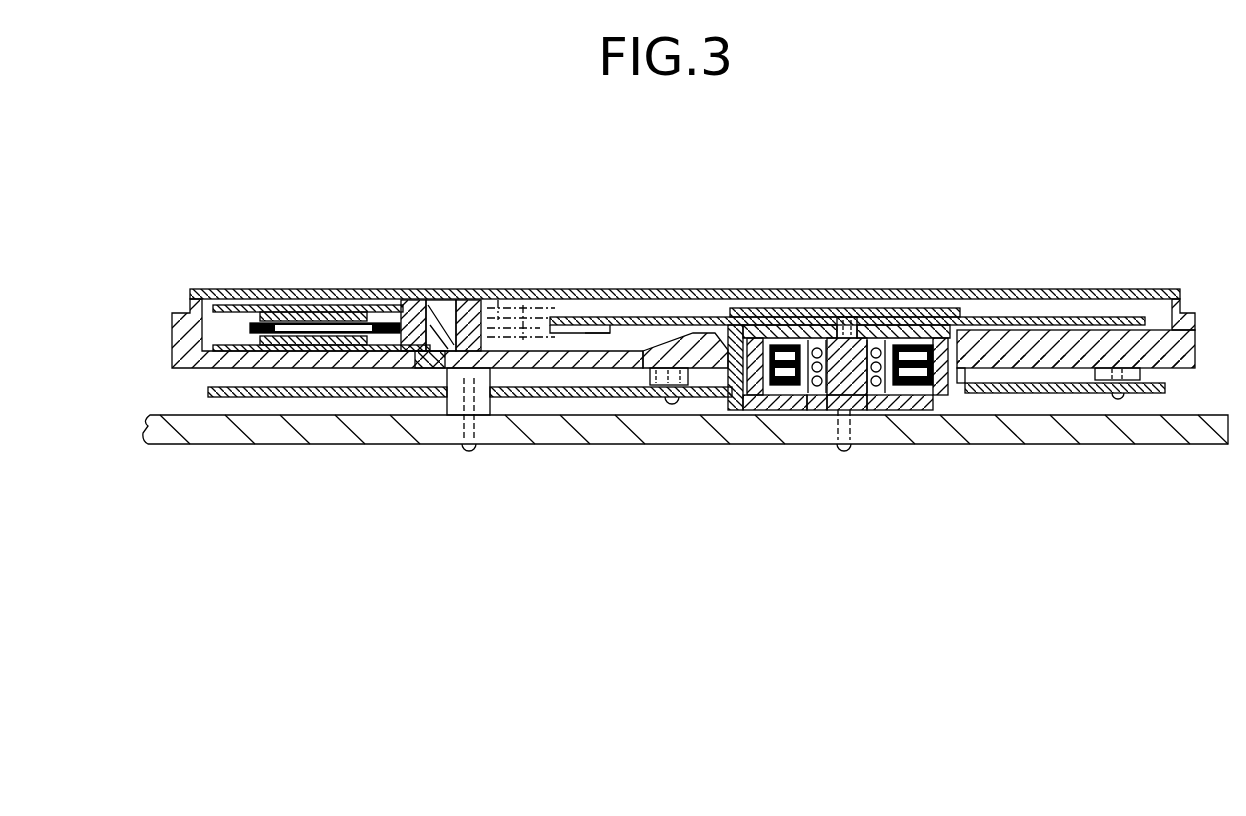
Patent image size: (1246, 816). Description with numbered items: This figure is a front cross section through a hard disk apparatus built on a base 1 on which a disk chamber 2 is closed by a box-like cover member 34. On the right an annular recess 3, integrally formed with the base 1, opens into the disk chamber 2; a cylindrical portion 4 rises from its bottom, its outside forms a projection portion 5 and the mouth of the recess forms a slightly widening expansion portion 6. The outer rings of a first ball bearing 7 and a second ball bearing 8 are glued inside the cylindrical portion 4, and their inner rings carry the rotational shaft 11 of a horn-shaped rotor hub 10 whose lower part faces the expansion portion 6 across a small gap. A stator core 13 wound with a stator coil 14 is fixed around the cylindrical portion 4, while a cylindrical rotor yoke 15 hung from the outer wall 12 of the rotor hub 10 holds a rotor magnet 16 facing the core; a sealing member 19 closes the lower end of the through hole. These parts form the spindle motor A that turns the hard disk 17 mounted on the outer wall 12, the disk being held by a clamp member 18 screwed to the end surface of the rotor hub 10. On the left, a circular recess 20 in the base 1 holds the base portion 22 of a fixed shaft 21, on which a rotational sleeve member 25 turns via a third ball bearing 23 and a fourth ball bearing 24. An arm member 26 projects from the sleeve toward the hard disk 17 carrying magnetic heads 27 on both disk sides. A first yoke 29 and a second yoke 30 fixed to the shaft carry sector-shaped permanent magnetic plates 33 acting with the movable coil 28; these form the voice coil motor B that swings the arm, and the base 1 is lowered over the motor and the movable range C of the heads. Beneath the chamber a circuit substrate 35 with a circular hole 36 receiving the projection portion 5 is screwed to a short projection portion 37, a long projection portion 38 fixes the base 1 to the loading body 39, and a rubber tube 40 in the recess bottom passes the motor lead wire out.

The base 1 is at (1010, 368).
The disk chamber 2 is at (1160, 315).
The annular recess 3 is at (946, 398).
The cylindrical portion 4 is at (860, 322).
The projection portion 5 is at (977, 370).
The expansion portion 6 is at (702, 350).
The first ball bearing 7 is at (856, 338).
The second ball bearing 8 is at (888, 410).
The rotor hub 10 is at (770, 338).
The rotational shaft 11 is at (858, 410).
The outer wall 12 is at (985, 347).
The stator core 13 is at (935, 338).
The stator coil 14 is at (884, 345).
The rotor yoke 15 is at (782, 343).
The rotor magnet 16 is at (812, 340).
The hard disk 17 is at (660, 317).
The rotor yoke 18 is at (815, 308).
The sealing member 19 is at (820, 410).
The circular recess 20 is at (428, 356).
The fixed shaft 21 is at (463, 303).
The base portion 22 is at (437, 352).
The third ball bearing 23 is at (430, 305).
The fourth ball bearing 24 is at (494, 308).
The rotational sleeve member 25 is at (413, 318).
The arm member 26 is at (525, 318).
The magnetic heads 27 is at (627, 316).
The movable coil 28 is at (232, 304).
The first yoke 29 is at (356, 344).
The second yoke 30 is at (362, 353).
The permanent magnetic plates 33 is at (262, 323).
The cover member 34 is at (1078, 291).
The circuit substrate 35 is at (1062, 395).
The circular hole 36 is at (750, 365).
The short projection portion 37 is at (652, 371).
The long projection portion 38 is at (497, 372).
The body 39 is at (1122, 446).
The rubber tube 40 is at (775, 410).
The spindle motor A is at (905, 410).
The voice coil motor B is at (209, 336).
The movable range C is at (592, 335).